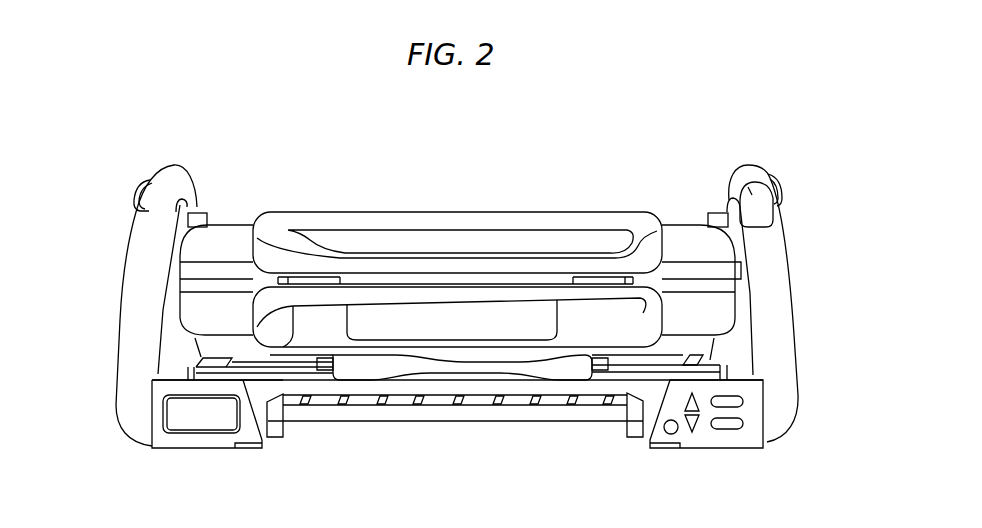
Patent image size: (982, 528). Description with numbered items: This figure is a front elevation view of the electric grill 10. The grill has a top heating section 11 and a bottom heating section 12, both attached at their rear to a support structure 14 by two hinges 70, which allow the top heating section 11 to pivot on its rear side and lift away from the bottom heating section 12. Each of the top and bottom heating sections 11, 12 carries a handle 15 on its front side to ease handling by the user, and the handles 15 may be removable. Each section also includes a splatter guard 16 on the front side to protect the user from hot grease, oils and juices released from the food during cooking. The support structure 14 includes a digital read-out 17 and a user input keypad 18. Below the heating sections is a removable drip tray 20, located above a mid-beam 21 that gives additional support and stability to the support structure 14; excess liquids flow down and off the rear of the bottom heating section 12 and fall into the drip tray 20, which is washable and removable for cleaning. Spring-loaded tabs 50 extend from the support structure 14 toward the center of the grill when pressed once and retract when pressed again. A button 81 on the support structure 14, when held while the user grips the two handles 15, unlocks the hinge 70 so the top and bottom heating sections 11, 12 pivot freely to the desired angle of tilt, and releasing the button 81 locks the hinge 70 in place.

The electric grill 10 is at (744, 108).
The top heating section 11 is at (683, 235).
The bottom heating section 12 is at (700, 312).
The support structure 14 is at (781, 391).
The handle 15 is at (275, 222).
The splatter guard 16 is at (525, 328).
The digital read-out 17 is at (181, 420).
The user input keypad 18 is at (727, 429).
The drip tray 20 is at (607, 363).
The mid-beam 21 is at (377, 412).
The tab 50 is at (134, 200).
The hinge 70 is at (726, 207).
The button 81 is at (780, 213).